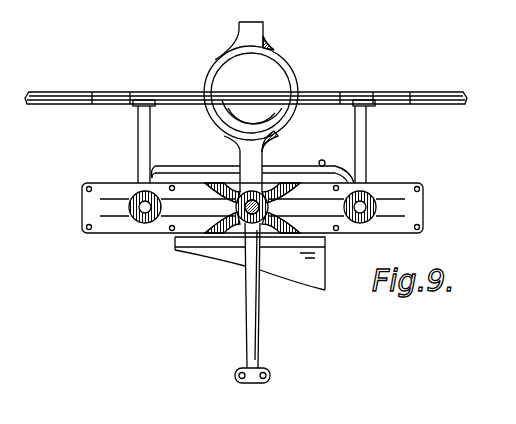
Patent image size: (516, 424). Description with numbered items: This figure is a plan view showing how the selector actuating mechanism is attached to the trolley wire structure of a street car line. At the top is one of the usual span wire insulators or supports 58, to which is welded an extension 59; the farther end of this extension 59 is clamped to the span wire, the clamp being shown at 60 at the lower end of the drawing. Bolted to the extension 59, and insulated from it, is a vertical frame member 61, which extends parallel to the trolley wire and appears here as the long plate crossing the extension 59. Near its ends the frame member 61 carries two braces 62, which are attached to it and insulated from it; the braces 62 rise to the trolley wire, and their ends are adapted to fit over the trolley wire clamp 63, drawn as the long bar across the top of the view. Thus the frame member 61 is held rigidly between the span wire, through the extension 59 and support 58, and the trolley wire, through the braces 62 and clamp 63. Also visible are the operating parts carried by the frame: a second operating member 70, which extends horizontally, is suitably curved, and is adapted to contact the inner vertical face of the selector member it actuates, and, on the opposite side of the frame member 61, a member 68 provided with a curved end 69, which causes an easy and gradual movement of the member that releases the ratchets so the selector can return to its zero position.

The span wire insulator 58 is at (264, 68).
The extension 59 is at (258, 182).
The span wire clamp 60 is at (256, 384).
The vertical frame member 61 is at (412, 206).
The brace 62 is at (141, 137).
The trolley wire clamp 63 is at (395, 91).
The operating member 68 is at (321, 160).
The curved end 69 is at (165, 168).
The second operating member 70 is at (302, 291).